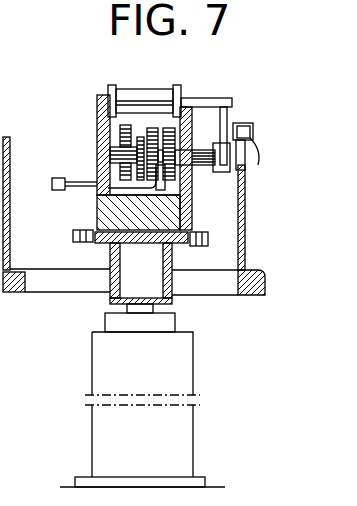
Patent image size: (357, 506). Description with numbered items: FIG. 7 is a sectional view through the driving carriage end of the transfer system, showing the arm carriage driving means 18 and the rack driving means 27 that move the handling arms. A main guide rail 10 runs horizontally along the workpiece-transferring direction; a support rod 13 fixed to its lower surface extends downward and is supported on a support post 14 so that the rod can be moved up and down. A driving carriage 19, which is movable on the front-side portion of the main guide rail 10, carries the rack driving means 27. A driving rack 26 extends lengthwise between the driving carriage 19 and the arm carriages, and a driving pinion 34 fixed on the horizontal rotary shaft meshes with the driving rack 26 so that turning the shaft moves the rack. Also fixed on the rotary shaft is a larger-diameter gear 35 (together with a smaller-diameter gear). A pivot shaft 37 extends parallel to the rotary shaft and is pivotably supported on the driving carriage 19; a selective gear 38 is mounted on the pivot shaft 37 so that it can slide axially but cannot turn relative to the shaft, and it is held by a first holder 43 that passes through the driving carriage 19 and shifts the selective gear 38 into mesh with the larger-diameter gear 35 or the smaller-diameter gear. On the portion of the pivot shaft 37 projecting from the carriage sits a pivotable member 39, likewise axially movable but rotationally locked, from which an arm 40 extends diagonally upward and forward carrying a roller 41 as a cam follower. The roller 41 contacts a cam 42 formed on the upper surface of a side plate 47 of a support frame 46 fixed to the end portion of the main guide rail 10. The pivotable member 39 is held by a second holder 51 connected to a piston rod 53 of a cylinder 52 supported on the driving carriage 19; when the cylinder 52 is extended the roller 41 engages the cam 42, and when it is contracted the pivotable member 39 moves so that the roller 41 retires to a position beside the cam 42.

The main guide rail 10 is at (172, 280).
The support rod 13 is at (127, 308).
The support post 14 is at (181, 371).
The arm carriage driving means 18 is at (57, 250).
The driving carriage 19 is at (100, 139).
The driving rack 26 is at (165, 184).
The rack driving means 27 is at (159, 120).
The driving pinion 34 is at (176, 138).
The larger-diameter gear 35 is at (123, 128).
The pivot shaft 37 is at (200, 151).
The selective gear 38 is at (110, 158).
The pivotable member 39 is at (227, 168).
The arm 40 is at (245, 191).
The roller 41 is at (250, 130).
The cam 42 is at (268, 157).
The first holder 43 is at (88, 188).
The support frame 46 is at (243, 284).
The side plate 47 is at (245, 236).
The second holder 51 is at (238, 106).
The cylinder 52 is at (144, 92).
The piston rod 53 is at (215, 99).